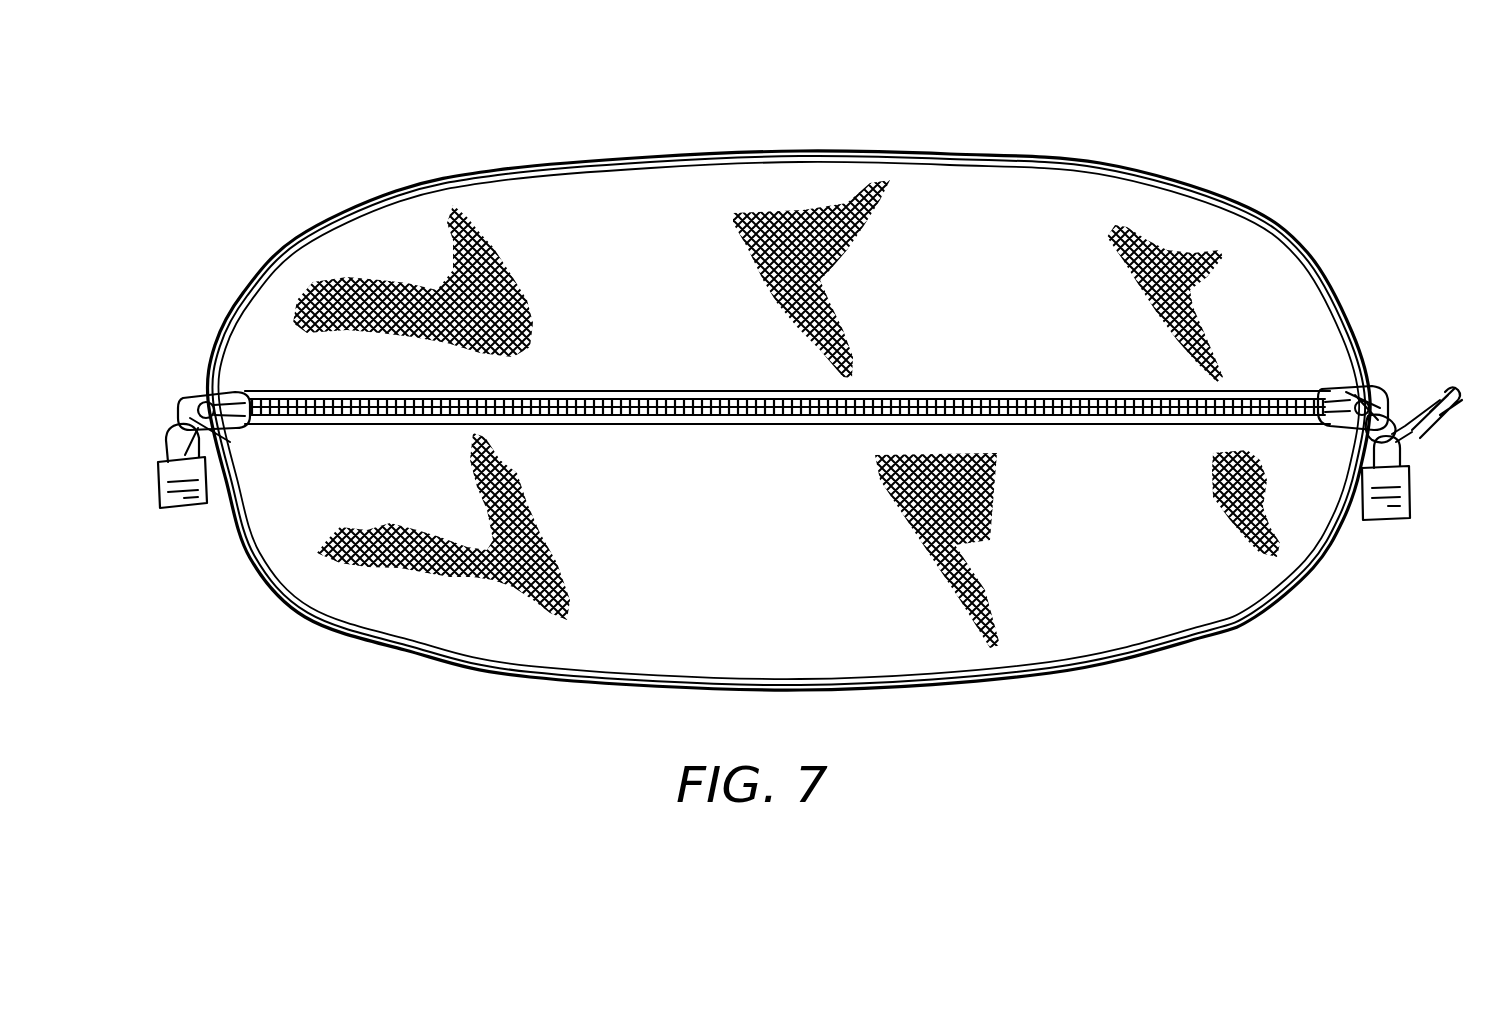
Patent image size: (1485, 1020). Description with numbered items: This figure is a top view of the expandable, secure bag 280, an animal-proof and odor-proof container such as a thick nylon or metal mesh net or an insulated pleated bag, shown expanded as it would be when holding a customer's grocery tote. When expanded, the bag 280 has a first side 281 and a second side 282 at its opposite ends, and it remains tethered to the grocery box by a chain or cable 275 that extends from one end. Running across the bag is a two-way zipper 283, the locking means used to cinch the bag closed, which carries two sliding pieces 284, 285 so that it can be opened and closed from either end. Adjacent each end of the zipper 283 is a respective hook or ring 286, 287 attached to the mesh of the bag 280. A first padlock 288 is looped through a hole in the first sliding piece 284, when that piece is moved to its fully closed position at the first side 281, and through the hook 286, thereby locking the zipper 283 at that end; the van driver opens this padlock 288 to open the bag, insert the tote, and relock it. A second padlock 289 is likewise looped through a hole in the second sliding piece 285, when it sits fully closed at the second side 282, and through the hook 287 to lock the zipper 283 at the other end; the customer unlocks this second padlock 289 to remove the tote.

The chain or cable 275 is at (1428, 392).
The expandable secure bag 280 is at (762, 152).
The first side 281 is at (1310, 248).
The second side 282 is at (238, 298).
The two-way zipper 283 is at (762, 422).
The first sliding piece 284 is at (1380, 387).
The second sliding piece 285 is at (192, 398).
The hook or ring 286 is at (1352, 447).
The hook or ring 287 is at (240, 478).
The first padlock 288 is at (1368, 513).
The second padlock 289 is at (173, 508).